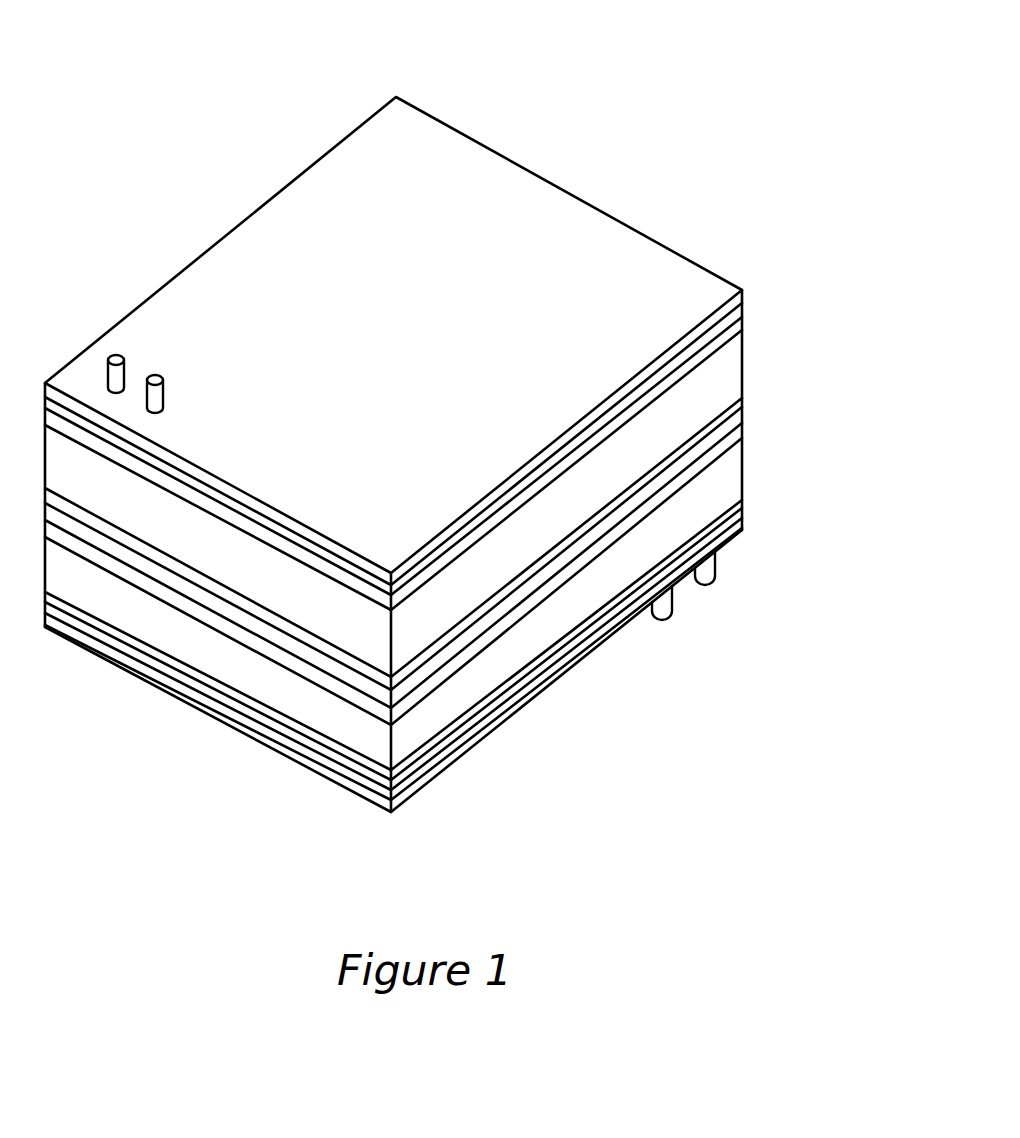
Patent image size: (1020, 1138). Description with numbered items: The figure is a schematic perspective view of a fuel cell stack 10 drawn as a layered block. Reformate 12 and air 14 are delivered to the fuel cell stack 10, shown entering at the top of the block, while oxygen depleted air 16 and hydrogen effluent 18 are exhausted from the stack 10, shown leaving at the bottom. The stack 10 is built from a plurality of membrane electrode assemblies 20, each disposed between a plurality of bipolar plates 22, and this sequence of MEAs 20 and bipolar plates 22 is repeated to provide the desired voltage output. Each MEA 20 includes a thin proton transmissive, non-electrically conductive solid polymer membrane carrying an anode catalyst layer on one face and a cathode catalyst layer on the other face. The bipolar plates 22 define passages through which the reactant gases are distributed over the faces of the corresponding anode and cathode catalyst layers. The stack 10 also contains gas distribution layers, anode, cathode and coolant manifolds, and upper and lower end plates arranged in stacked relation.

The fuel cell stack 10 is at (612, 137).
The reformate 12 is at (116, 340).
The air 14 is at (155, 367).
The oxygen depleted air 16 is at (662, 628).
The hydrogen effluent 18 is at (705, 590).
The membrane electrode assembly 20 is at (743, 421).
The bipolar plate 22 is at (743, 399).